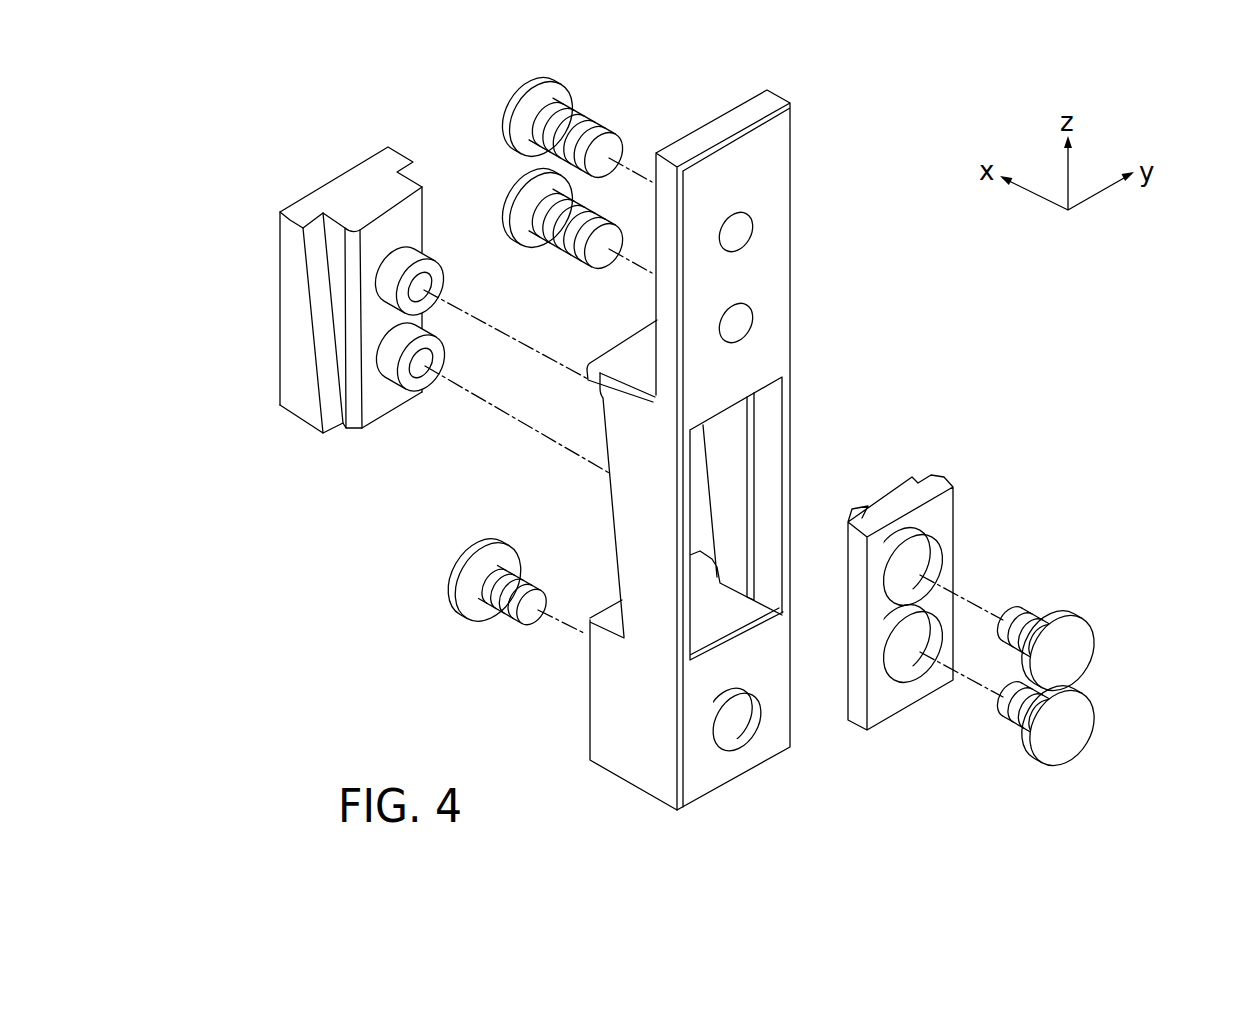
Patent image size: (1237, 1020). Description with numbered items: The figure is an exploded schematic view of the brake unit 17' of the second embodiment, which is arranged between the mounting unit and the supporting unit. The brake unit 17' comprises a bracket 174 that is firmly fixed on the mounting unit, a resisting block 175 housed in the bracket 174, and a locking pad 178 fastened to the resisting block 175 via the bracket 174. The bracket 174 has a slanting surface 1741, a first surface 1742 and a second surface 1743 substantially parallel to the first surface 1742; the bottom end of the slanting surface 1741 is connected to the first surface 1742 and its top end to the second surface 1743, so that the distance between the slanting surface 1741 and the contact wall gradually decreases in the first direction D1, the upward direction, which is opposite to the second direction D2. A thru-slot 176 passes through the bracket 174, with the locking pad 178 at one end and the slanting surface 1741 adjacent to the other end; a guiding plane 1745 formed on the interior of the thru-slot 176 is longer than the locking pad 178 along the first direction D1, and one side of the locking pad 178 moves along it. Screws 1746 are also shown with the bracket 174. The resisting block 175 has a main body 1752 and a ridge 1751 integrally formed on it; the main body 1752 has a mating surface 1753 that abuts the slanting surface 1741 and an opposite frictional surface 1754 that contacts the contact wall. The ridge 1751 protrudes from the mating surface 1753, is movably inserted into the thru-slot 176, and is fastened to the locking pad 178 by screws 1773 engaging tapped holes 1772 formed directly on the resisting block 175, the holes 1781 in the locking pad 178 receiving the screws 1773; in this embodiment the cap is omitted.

The brake unit 17' is at (254, 593).
The bracket 174 is at (644, 450).
The slanting surface 1741 is at (615, 543).
The first surface 1742 is at (619, 600).
The second surface 1743 is at (598, 387).
The guiding plane 1745 is at (750, 430).
The screw 1746 is at (572, 104).
The resisting block 175 is at (400, 298).
The ridge 1751 is at (355, 380).
The main body 1752 is at (302, 405).
The mating surface 1753 is at (312, 263).
The frictional surface 1754 is at (360, 160).
The thru-slot 176 is at (715, 615).
The tapped holes 1772 is at (437, 267).
The screws 1773 is at (1082, 648).
The locking pad 178 is at (958, 622).
The hole 1781 is at (920, 561).
The first direction D1 is at (224, 352).
The second direction D2 is at (213, 353).